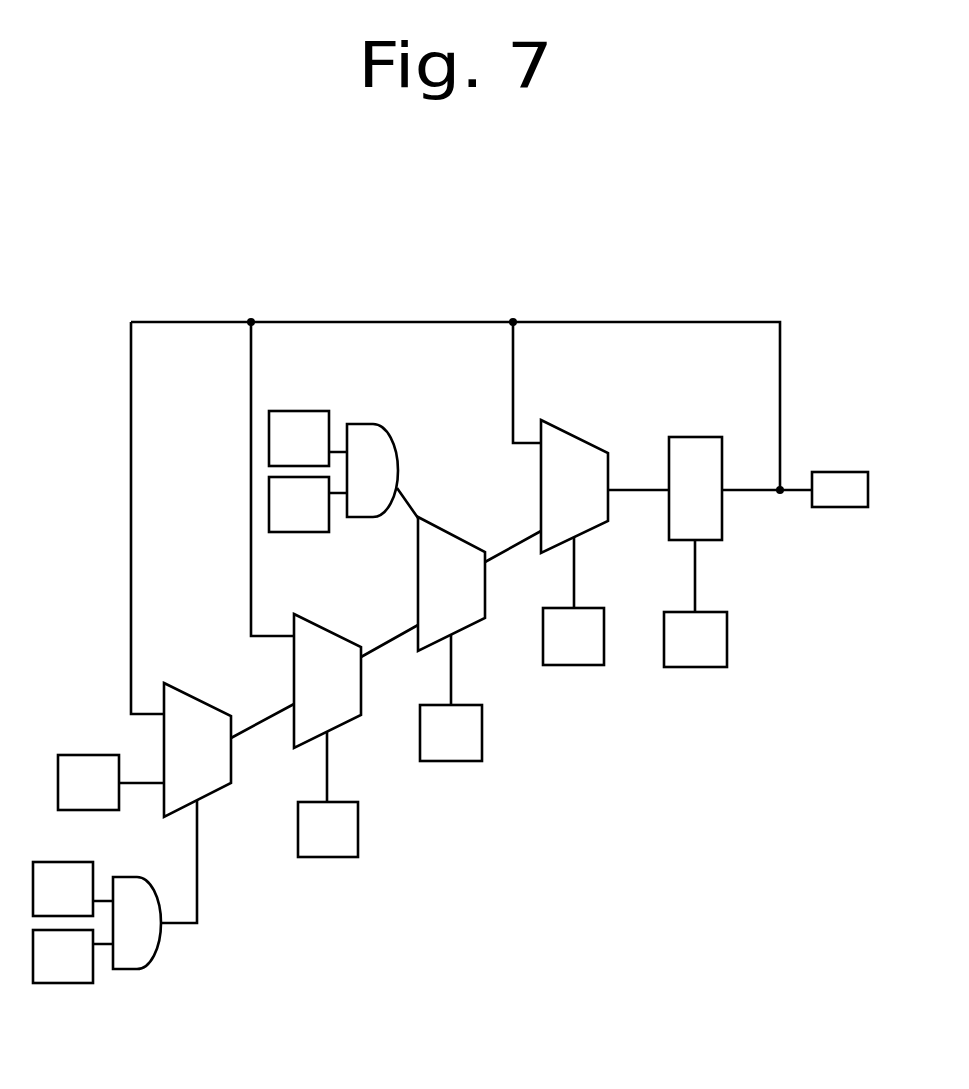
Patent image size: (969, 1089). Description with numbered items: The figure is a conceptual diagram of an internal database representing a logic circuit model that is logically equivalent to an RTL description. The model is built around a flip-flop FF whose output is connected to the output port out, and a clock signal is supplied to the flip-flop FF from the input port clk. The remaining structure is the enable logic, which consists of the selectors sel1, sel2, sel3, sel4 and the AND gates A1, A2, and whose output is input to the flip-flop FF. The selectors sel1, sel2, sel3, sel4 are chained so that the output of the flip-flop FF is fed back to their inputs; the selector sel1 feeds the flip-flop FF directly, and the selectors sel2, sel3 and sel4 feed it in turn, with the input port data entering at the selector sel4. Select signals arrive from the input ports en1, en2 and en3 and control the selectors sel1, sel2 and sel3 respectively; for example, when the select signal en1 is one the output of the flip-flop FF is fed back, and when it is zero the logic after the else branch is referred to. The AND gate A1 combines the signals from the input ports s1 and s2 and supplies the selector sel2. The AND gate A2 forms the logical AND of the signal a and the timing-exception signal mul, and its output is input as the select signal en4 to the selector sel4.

The input port s1 is at (299, 438).
The input port s2 is at (299, 504).
The AND gate A1 is at (372, 470).
The AND gate A2 is at (137, 923).
The selector sel1 is at (574, 486).
The selector sel2 is at (451, 584).
The selector sel3 is at (327, 681).
The selector sel4 is at (197, 750).
The select signal en1 is at (573, 636).
The select signal en2 is at (451, 733).
The select signal en3 is at (328, 829).
The select signal en4 is at (220, 858).
The flip-flop FF is at (695, 488).
The input port clk is at (695, 639).
The output port out is at (840, 489).
The input port data is at (88, 782).
The timing-exception signal mul is at (63, 889).
The signal a is at (63, 956).